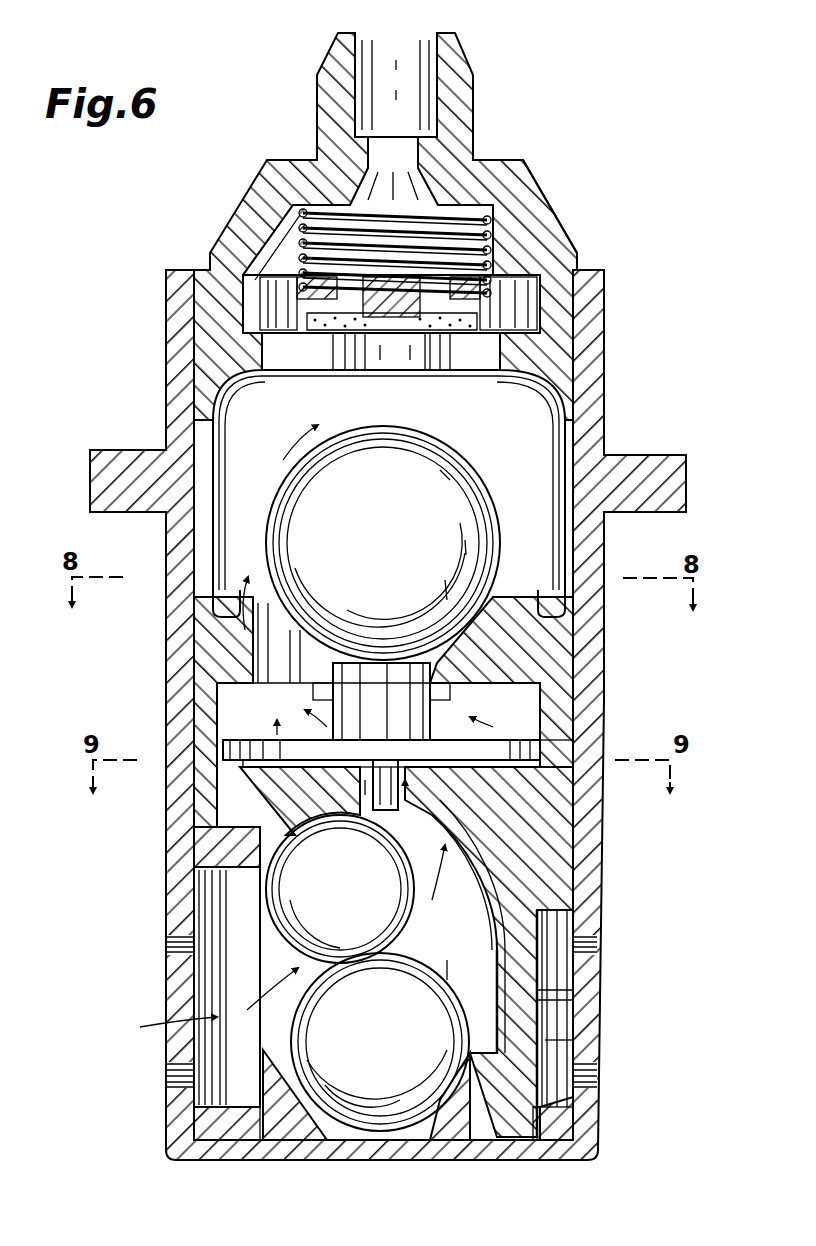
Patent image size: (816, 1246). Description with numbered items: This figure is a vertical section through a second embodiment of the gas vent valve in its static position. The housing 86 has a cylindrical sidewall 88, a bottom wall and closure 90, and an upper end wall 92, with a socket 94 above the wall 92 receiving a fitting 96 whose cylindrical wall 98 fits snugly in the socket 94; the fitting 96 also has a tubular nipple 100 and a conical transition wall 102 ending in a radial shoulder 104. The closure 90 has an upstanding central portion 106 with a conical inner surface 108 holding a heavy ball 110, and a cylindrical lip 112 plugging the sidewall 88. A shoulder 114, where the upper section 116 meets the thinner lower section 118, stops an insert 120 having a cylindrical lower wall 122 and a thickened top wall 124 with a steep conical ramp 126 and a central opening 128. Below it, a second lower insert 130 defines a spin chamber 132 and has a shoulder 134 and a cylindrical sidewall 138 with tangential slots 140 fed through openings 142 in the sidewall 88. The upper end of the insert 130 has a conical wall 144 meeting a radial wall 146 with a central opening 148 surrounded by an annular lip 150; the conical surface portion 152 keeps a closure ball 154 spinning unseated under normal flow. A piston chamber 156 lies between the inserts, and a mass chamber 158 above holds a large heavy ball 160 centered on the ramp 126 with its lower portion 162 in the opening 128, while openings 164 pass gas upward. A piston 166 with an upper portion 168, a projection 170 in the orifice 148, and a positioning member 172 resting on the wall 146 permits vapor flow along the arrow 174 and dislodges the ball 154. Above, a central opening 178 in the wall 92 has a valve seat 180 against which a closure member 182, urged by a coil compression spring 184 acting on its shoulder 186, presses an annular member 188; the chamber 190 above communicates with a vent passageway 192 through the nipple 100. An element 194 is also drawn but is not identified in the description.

The housing 86 is at (137, 853).
The cylindrical sidewall 88 is at (177, 670).
The bottom wall and closure 90 is at (290, 1153).
The upper end wall 92 is at (487, 373).
The socket 94 is at (583, 323).
The fitting 96 is at (523, 212).
The cylindrical wall 98 is at (573, 290).
The tubular nipple 100 is at (460, 115).
The conical transition wall 102 is at (522, 198).
The radial surface or shoulder 104 is at (360, 202).
The upstanding central portion 106 is at (583, 1050).
The conical inner surface 108 is at (437, 1090).
The heavy ball 110 is at (380, 1044).
The cylindrical lip 112 is at (597, 1123).
The shoulder 114 is at (197, 617).
The upper section 116 is at (215, 520).
The lower section 118 is at (163, 803).
The insert 120 is at (573, 693).
The cylindrical lower wall 122 is at (560, 803).
The thickened top wall 124 is at (603, 640).
The conical ramp 126 is at (497, 597).
The central opening 128 is at (413, 640).
The second lower insert 130 is at (573, 960).
The spin chamber 132 is at (573, 920).
The radial surface or shoulder 134 is at (560, 833).
The cylindrical sidewall 138 is at (560, 1013).
The tangential slots 140 is at (233, 1047).
The openings 142 is at (203, 1002).
The conical wall 144 is at (560, 753).
The radial wall 146 is at (405, 800).
The central opening 148 is at (337, 812).
The annular lip 150 is at (320, 840).
The upper inner surface portion 152 is at (447, 900).
The closure ball 154 is at (362, 921).
The piston chamber 156 is at (560, 713).
The mass chamber 158 is at (610, 423).
The heavy ball 160 is at (388, 514).
The lower portion 162 is at (427, 690).
The openings 164 is at (270, 647).
The piston 166 is at (240, 723).
The upper portion 168 is at (450, 700).
The projection 170 is at (375, 812).
The positioning member 172 is at (247, 773).
The arrow 174 is at (235, 730).
The central opening 178 is at (387, 363).
The valve seat 180 is at (380, 363).
The closure member 182 is at (557, 350).
The coil compression spring 184 is at (493, 240).
The upper shoulder 186 is at (513, 267).
The annular member 188 is at (427, 343).
The chamber 190 is at (417, 187).
The vent passageway 192 is at (420, 83).
The left cylinder 194 is at (270, 318).